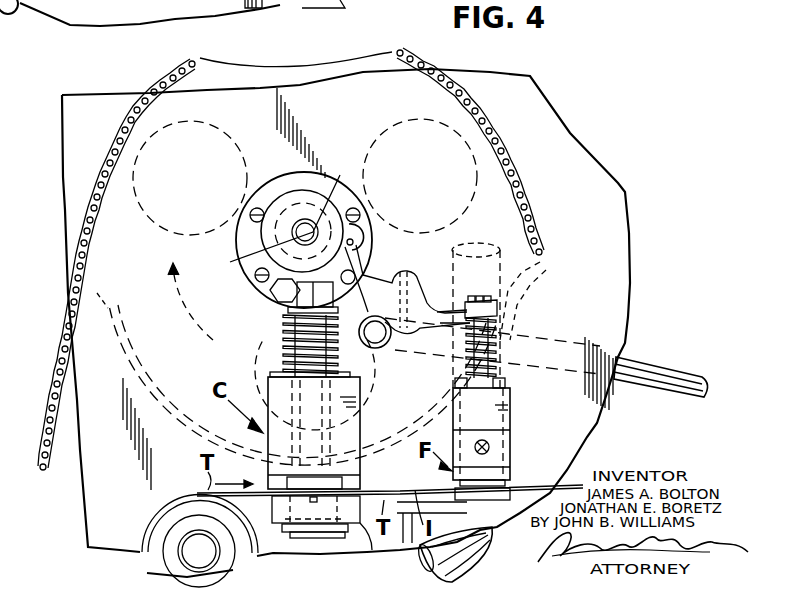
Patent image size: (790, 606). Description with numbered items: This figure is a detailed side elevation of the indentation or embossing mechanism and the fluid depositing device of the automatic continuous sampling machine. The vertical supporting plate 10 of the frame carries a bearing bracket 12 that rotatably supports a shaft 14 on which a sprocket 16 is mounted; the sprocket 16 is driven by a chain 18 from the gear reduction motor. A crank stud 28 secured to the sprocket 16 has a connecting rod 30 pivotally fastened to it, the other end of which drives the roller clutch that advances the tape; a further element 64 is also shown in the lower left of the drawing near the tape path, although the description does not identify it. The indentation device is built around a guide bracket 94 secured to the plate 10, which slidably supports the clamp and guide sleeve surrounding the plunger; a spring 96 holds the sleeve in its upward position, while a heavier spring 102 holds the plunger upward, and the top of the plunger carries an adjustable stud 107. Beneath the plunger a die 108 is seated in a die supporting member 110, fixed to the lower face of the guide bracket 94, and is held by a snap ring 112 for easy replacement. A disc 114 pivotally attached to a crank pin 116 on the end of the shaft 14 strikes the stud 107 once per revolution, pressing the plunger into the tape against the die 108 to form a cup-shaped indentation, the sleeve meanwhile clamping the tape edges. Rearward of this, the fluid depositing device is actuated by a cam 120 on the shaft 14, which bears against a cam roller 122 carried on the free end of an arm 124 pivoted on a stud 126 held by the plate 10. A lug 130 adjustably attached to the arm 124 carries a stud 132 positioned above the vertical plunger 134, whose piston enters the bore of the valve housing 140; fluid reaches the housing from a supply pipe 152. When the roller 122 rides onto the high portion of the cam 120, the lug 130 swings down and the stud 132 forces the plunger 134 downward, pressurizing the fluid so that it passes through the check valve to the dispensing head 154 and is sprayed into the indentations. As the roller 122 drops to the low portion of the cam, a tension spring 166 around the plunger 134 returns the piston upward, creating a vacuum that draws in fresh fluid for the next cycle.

The vertical supporting plate 10 is at (584, 156).
The bearing bracket 12 is at (280, 185).
The shaft 14 is at (262, 243).
The sprocket 16 is at (296, 75).
The chain 18 is at (480, 95).
The crank stud 28 is at (285, 310).
The connecting rod 30 is at (656, 374).
The pulley 64 is at (190, 505).
The guide bracket 94 is at (278, 460).
The spring 96 is at (270, 375).
The spring 102 is at (283, 340).
The adjustable stud 107 is at (302, 280).
The die 108 is at (330, 540).
The die supporting member 110 is at (280, 545).
The snap ring 112 is at (372, 545).
The disc 114 is at (310, 230).
The crank pin 116 is at (323, 208).
The cam 120 is at (265, 262).
The cam roller 122 is at (362, 236).
The arm 124 is at (383, 274).
The stud 126 is at (376, 340).
The lug 130 is at (450, 308).
The stud 132 is at (493, 326).
The vertical plunger 134 is at (463, 368).
The valve housing 140 is at (498, 402).
The supply pipe 152 is at (462, 566).
The dispensing head 154 is at (500, 474).
The tension spring 166 is at (497, 368).